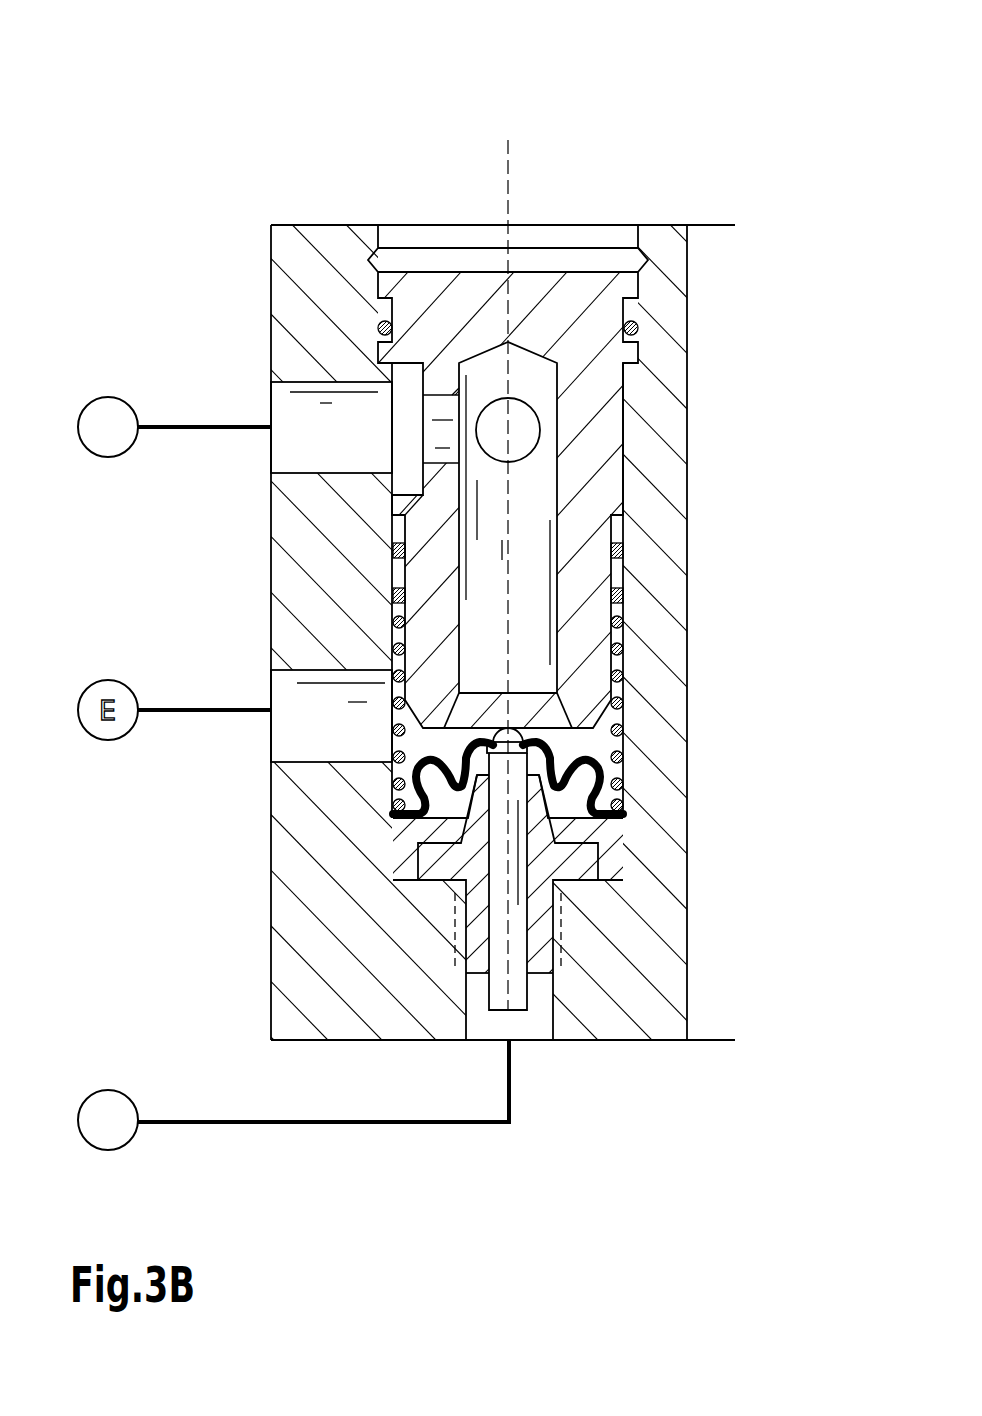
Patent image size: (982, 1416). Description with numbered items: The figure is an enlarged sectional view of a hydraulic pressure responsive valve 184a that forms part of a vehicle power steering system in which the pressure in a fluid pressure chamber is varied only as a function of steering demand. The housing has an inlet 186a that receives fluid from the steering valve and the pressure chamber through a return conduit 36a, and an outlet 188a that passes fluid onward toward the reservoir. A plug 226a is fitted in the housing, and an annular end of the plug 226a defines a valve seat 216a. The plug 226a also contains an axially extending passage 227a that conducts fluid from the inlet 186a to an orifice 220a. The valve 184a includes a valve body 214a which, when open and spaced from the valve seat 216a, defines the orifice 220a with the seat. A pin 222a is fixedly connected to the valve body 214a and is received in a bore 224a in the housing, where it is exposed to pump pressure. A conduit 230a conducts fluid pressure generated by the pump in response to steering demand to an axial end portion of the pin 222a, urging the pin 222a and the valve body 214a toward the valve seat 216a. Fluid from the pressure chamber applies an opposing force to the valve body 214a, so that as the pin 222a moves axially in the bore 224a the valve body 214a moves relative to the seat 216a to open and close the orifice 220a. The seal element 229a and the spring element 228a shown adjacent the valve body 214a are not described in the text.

The valve 184a is at (465, 185).
The plug 226a is at (428, 296).
The inlet 186a is at (275, 412).
The return conduit 36a is at (196, 427).
The axially extending passage 227a is at (485, 572).
The seal ring 229a is at (624, 562).
The orifice 220a is at (457, 687).
The outlet 188a is at (287, 697).
The spring 228a is at (627, 650).
The valve seat 216a is at (570, 713).
The valve body 214a is at (410, 762).
The pin 222a is at (483, 808).
The bore 224a is at (522, 970).
The conduit 230a is at (275, 1125).